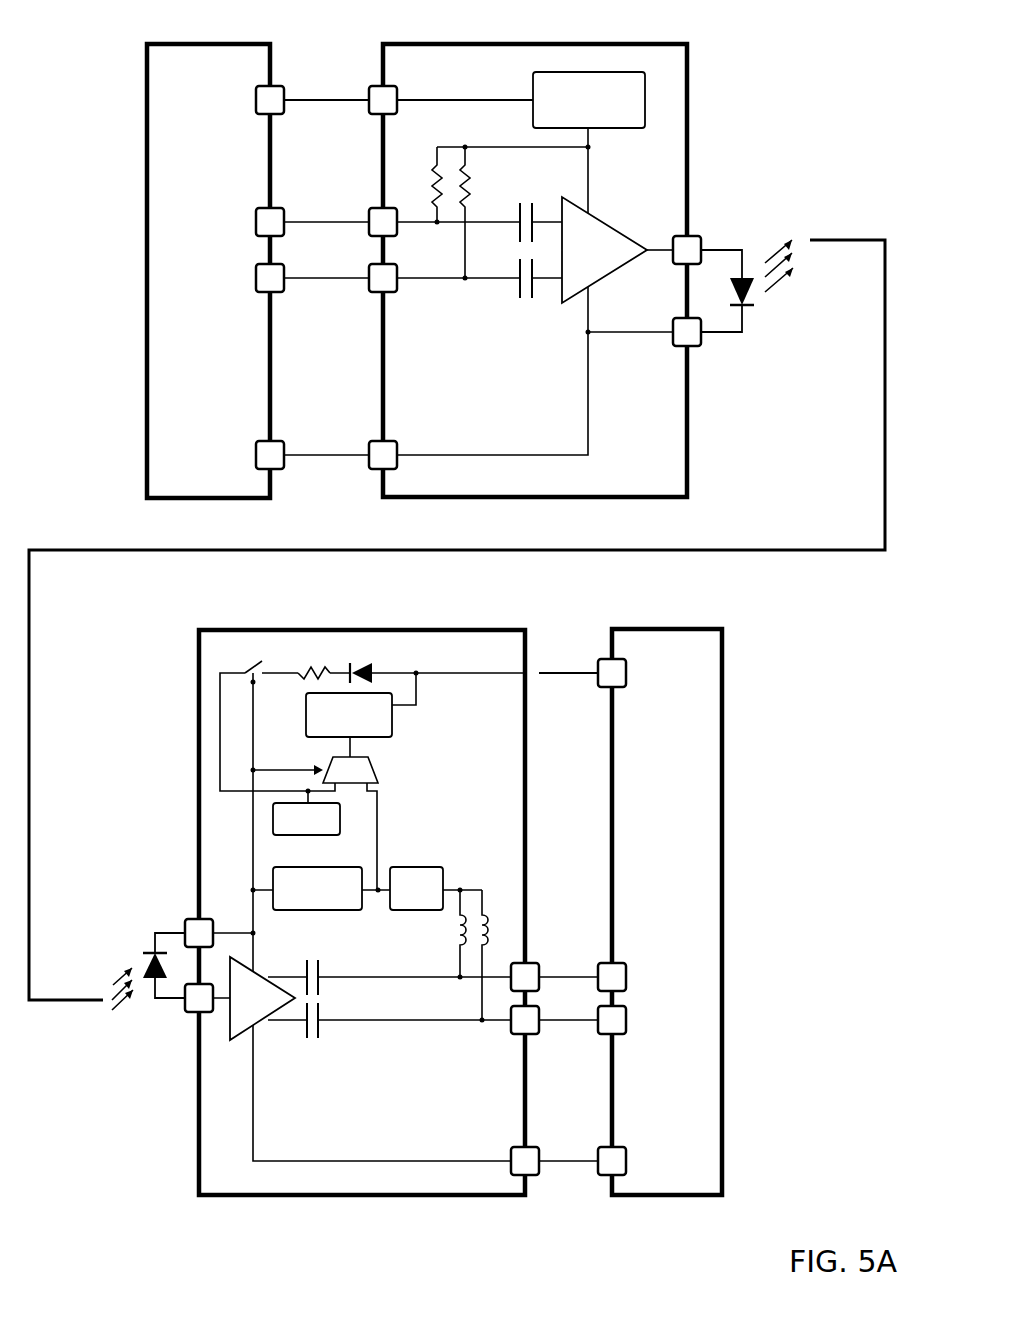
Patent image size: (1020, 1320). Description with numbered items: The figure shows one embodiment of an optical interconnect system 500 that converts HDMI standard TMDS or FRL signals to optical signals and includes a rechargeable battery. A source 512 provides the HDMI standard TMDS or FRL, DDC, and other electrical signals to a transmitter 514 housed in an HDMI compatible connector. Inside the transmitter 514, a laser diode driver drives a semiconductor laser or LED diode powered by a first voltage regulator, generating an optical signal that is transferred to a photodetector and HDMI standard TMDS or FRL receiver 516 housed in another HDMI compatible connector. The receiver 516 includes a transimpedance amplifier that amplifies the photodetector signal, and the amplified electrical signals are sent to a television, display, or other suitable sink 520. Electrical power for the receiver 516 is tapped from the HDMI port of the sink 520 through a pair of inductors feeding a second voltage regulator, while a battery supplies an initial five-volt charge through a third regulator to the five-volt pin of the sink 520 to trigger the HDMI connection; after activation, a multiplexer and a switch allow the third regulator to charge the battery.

The optical interconnect system 500 is at (118, 108).
The source 512 is at (207, 479).
The transmitter 514 is at (645, 479).
The receiver 516 is at (241, 1182).
The sink 520 is at (706, 1182).